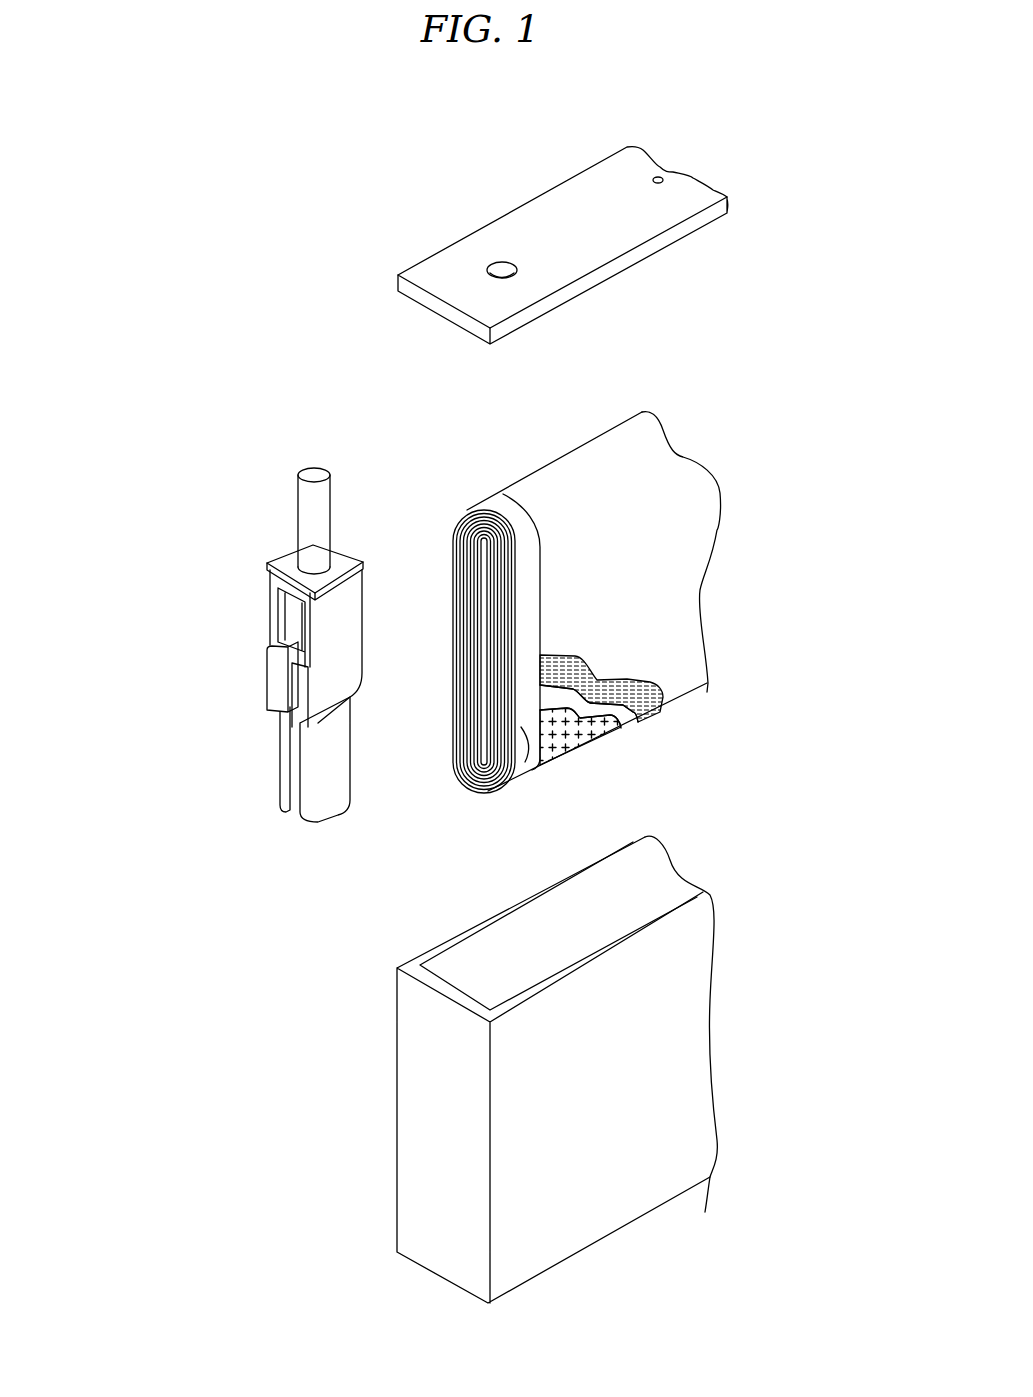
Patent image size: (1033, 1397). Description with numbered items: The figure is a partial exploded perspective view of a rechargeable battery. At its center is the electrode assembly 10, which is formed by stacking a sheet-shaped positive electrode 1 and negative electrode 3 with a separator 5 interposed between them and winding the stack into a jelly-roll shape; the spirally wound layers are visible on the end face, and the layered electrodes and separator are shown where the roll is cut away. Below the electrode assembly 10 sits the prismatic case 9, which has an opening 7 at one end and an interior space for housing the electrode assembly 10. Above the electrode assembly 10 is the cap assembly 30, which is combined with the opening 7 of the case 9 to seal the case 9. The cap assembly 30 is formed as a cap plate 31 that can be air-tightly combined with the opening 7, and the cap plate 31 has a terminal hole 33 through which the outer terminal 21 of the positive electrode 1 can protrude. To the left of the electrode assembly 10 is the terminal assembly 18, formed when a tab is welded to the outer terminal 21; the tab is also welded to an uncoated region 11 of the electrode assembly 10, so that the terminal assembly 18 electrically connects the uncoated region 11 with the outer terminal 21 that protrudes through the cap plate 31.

The positive electrode 1 is at (573, 740).
The negative electrode 3 is at (657, 708).
The separator 5 is at (623, 712).
The opening 7 is at (418, 962).
The case 9 is at (533, 1069).
The electrode assembly 10 is at (578, 594).
The uncoated region 11 is at (483, 787).
The terminal assembly 18 is at (254, 642).
The outer terminal 21 is at (300, 500).
The cap assembly 30 is at (563, 229).
The cap plate 31 is at (610, 235).
The terminal hole 33 is at (507, 267).